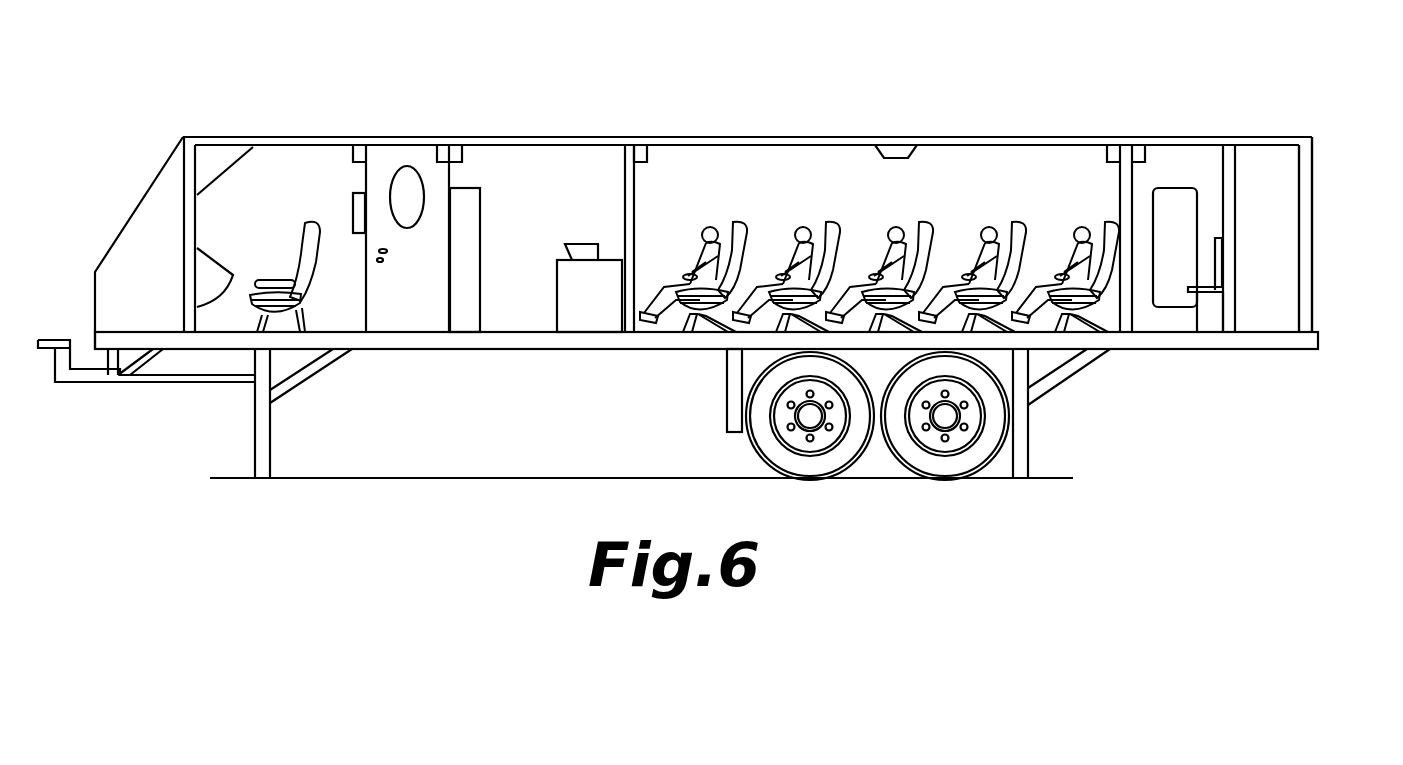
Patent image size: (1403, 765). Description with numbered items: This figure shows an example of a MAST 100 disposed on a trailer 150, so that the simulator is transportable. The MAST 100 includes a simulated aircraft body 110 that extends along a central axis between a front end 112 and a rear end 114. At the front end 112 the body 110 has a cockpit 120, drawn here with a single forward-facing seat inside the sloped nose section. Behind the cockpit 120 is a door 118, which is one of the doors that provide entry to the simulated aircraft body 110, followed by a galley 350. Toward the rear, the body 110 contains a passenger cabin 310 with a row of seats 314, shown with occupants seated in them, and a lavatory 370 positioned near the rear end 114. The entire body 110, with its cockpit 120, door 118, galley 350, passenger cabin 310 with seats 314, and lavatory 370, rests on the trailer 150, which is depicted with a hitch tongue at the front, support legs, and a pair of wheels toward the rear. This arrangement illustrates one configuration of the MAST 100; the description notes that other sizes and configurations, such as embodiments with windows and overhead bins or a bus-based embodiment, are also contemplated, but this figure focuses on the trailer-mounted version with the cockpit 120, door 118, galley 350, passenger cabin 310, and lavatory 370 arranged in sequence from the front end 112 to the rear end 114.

The MAST 100 is at (780, 103).
The simulated aircraft body 110 is at (650, 137).
The front end 112 is at (153, 183).
The rear end 114 is at (1313, 178).
The door 118 is at (450, 267).
The cockpit 120 is at (293, 181).
The trailer 150 is at (442, 350).
The passenger cabin 310 is at (997, 174).
The seats 314 is at (847, 233).
The galley 350 is at (547, 175).
The lavatory 370 is at (1188, 165).